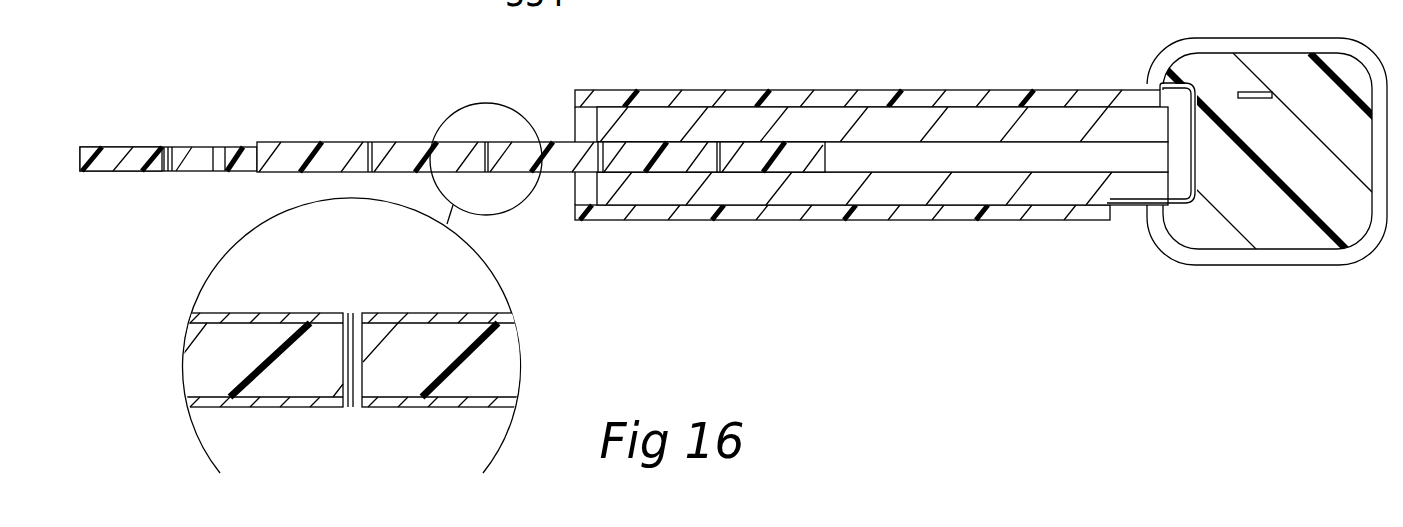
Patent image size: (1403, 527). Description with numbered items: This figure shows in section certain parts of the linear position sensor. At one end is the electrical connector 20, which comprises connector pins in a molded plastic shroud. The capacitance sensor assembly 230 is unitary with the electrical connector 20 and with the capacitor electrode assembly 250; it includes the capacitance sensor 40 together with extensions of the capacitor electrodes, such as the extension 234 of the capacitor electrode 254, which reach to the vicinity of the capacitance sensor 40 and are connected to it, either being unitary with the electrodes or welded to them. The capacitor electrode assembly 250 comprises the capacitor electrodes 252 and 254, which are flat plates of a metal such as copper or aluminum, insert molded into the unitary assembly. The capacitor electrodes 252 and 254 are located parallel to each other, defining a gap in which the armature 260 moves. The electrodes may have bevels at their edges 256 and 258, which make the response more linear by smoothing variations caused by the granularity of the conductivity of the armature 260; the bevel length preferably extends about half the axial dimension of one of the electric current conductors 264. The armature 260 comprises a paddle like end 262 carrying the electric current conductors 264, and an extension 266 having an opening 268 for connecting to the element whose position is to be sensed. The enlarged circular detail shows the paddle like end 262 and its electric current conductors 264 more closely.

The electrical connector 20 is at (1280, 263).
The capacitance sensor 40 is at (1263, 90).
The capacitance sensor assembly 230 is at (1251, 207).
The extension 234 is at (1112, 208).
The capacitor electrode assembly 250 is at (885, 199).
The capacitor electrode 252 is at (882, 117).
The capacitor electrode 254 is at (940, 187).
The edge 256 is at (598, 137).
The edge 258 is at (603, 173).
The armature 260 is at (522, 235).
The paddle like end 262 is at (245, 143).
The electric current conductors 264 is at (370, 142).
The extension 266 is at (97, 173).
The opening 268 is at (200, 155).